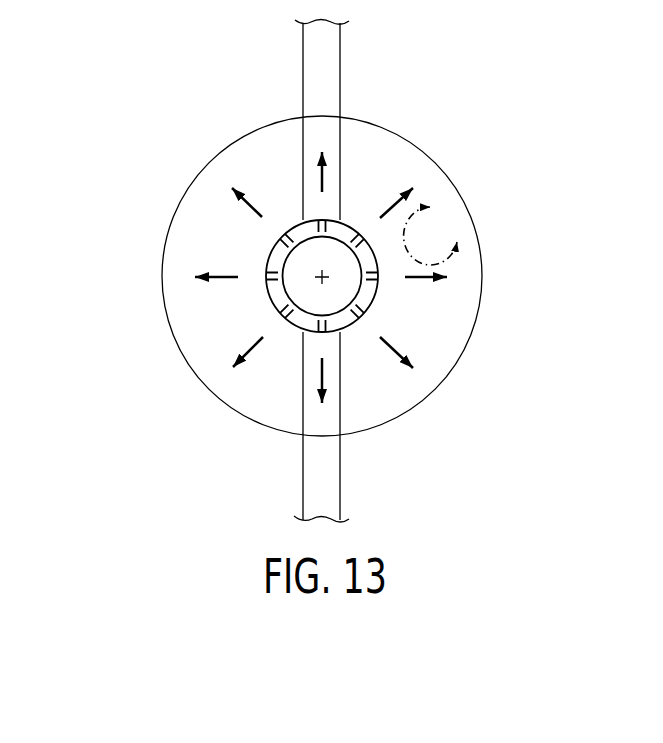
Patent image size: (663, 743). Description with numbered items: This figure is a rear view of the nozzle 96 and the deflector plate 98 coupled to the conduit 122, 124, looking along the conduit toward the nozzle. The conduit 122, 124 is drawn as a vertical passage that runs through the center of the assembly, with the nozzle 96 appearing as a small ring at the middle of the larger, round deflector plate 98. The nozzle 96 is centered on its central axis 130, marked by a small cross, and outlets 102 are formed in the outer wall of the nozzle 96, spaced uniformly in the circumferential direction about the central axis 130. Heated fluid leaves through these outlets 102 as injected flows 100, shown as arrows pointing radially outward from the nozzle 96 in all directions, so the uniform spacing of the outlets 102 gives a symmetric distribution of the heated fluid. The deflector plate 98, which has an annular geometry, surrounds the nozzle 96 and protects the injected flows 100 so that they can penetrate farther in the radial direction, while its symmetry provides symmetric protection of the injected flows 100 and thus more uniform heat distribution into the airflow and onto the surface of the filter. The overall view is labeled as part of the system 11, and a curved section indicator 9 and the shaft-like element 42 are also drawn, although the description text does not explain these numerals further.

The assembly 11 is at (185, 125).
The shaft 42 is at (379, 270).
The conduit 122 is at (340, 83).
The conduit 124 is at (343, 47).
The deflector plate 98 is at (475, 329).
The nozzle 96 is at (294, 329).
The outlets 102 is at (370, 320).
The central axis 130 is at (318, 280).
The injected flows 100 is at (252, 209).
The section line 9- 9 is at (438, 225).